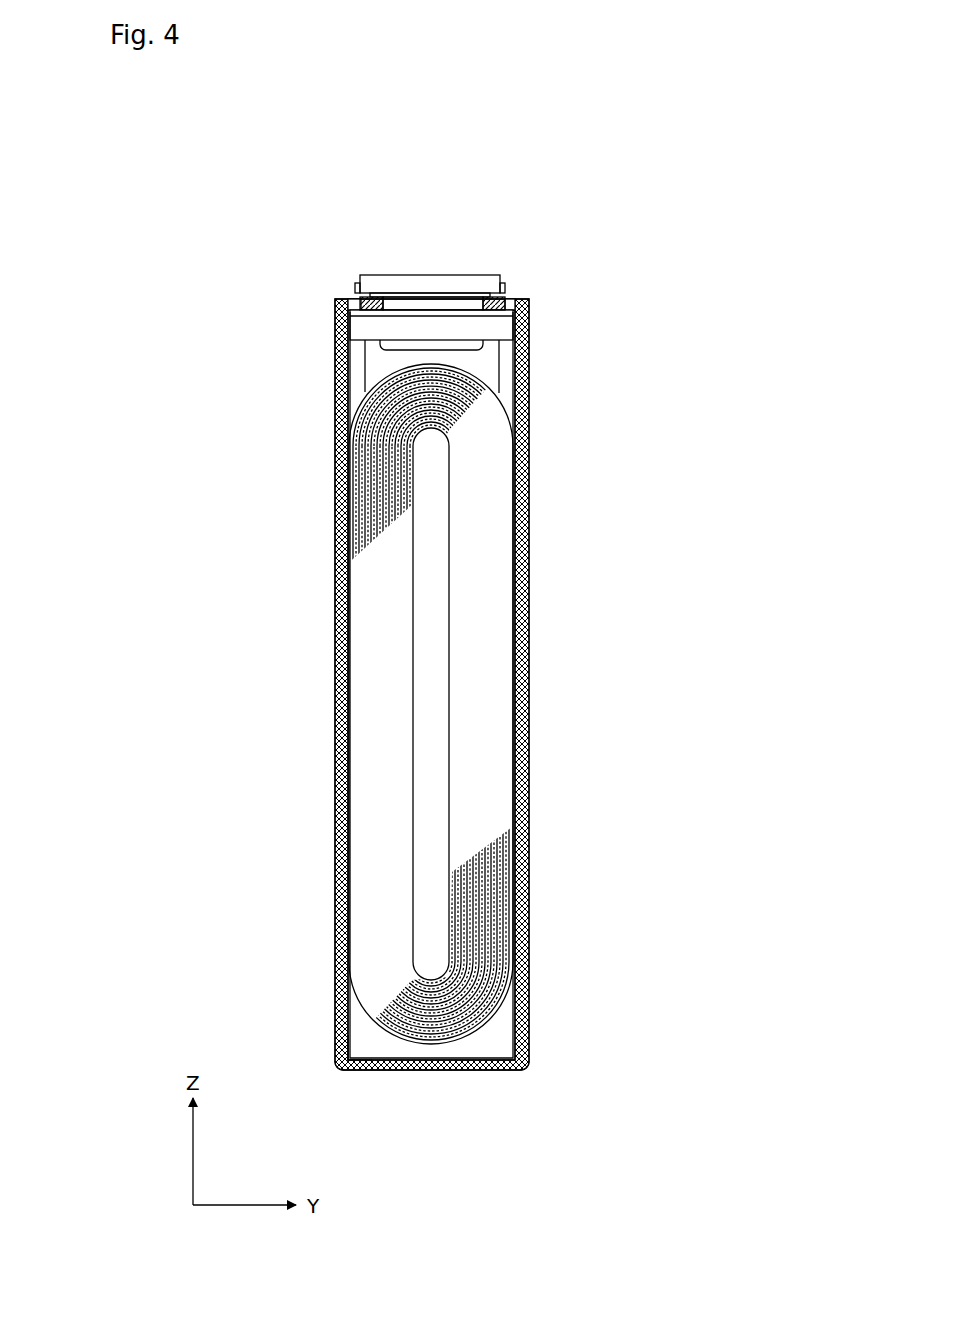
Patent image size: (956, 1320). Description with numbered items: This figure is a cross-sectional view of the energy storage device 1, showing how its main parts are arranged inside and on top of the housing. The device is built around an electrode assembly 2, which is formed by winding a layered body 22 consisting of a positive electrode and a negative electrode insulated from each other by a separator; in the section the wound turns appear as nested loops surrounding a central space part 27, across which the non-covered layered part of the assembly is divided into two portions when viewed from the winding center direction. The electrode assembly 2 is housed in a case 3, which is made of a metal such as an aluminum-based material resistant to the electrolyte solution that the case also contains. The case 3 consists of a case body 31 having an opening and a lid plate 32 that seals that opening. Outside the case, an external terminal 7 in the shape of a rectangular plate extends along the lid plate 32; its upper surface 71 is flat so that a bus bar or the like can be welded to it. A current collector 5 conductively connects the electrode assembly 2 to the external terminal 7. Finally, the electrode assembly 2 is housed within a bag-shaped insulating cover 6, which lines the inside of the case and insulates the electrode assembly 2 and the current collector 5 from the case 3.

The energy storage device 1 is at (578, 166).
The electrode assembly 2 is at (474, 370).
The layered body 22 is at (508, 405).
The space part 27 is at (430, 722).
The case 3 is at (185, 284).
The case body 31 is at (337, 356).
The lid plate 32 is at (342, 297).
The current collector 5 is at (362, 377).
The insulating cover 6 is at (349, 1031).
The external terminal 7 is at (416, 272).
The surface 71 is at (445, 273).